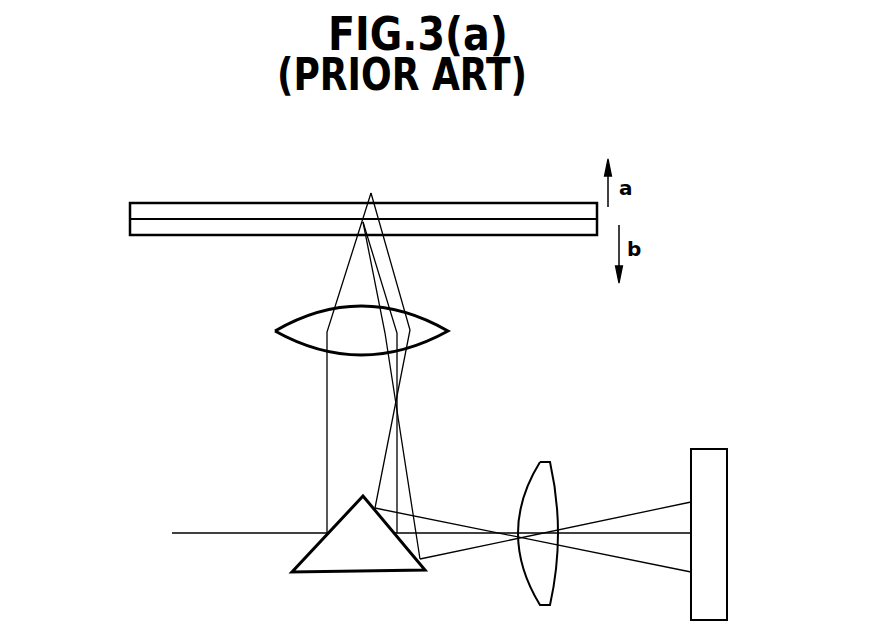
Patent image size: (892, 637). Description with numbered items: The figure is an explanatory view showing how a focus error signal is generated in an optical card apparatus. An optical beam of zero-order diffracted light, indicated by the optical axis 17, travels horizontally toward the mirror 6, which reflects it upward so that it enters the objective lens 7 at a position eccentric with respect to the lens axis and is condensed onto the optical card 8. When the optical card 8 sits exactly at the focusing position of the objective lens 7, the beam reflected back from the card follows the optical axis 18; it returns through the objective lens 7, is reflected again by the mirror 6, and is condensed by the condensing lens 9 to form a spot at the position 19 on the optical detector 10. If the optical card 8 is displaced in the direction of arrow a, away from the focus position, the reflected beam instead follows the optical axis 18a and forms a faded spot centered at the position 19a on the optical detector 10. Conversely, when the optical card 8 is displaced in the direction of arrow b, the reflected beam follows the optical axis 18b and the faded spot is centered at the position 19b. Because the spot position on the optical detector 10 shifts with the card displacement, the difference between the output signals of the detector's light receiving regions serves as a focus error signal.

The mirror 6 is at (292, 572).
The objective lens 7 is at (275, 332).
The optical card 8 is at (130, 222).
The condensing lens 9 is at (518, 565).
The optical detector 10 is at (703, 455).
The optical axis 17 is at (263, 533).
The optical axis 18 is at (384, 287).
The optical axis 18a is at (393, 267).
The optical axis 18b is at (374, 299).
The spot position 19 is at (691, 537).
The faded spot center position 19a is at (691, 572).
The faded spot center position 19b is at (691, 502).